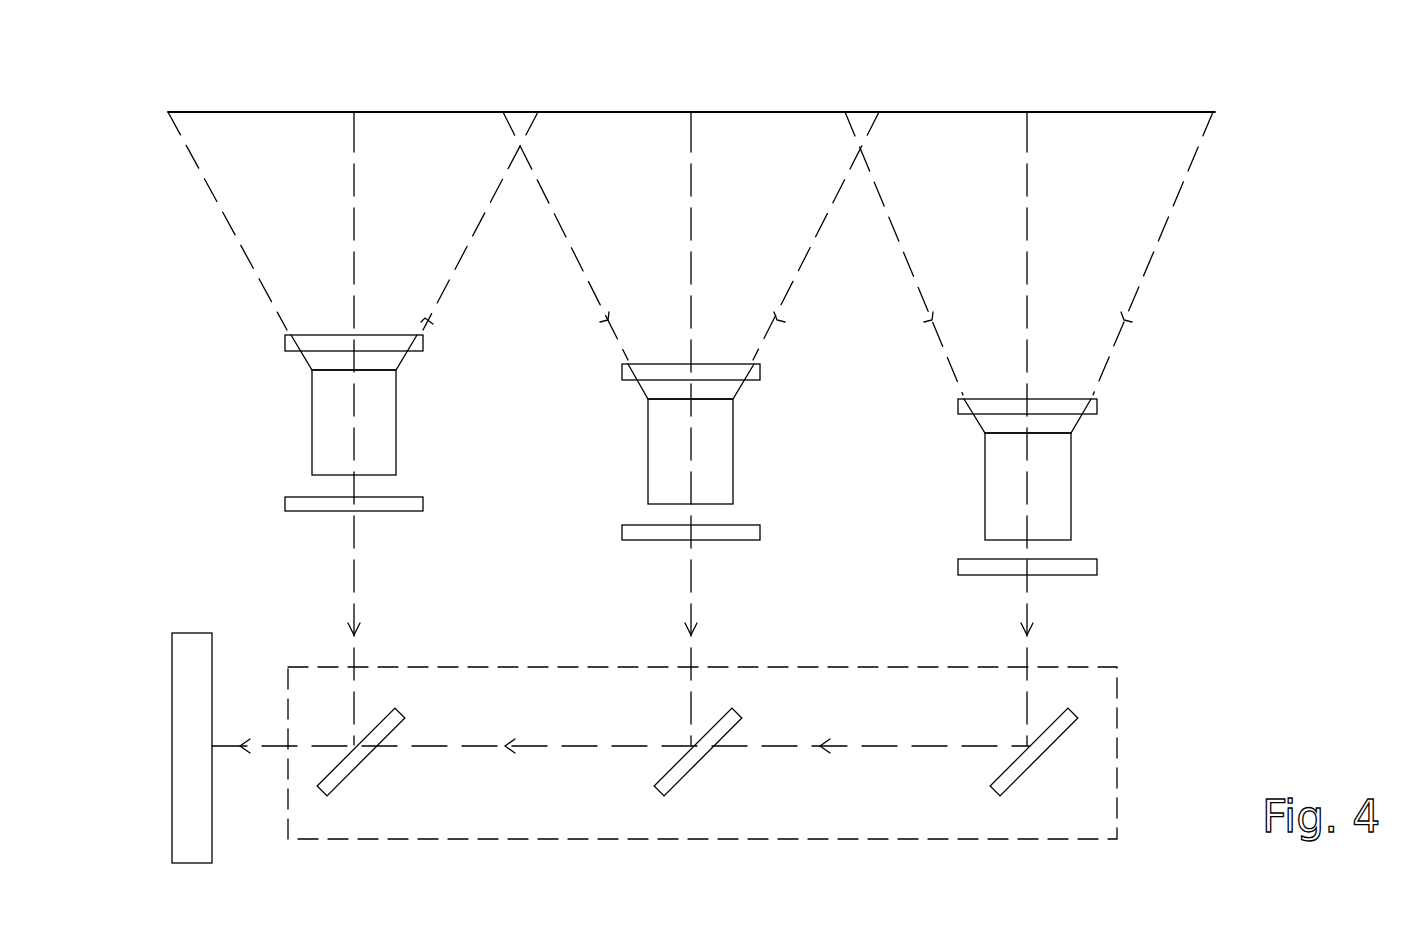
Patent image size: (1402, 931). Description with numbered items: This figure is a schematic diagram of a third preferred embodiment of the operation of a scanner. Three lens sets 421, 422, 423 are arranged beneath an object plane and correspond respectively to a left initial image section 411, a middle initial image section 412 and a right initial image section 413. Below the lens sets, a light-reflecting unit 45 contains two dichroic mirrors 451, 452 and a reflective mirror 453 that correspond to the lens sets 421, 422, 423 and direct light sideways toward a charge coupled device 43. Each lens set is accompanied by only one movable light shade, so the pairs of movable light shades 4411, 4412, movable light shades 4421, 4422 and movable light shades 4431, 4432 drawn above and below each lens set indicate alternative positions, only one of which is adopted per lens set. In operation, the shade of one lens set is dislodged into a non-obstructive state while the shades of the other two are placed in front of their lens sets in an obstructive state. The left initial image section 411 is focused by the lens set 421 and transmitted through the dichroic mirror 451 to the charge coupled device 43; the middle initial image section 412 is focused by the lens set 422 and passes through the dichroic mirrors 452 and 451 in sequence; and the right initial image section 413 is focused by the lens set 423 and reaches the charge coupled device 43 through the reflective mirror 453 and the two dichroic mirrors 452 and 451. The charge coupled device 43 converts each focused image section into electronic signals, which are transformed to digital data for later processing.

The left initial image section 411 is at (363, 112).
The middle initial image section 412 is at (700, 112).
The right initial image section 413 is at (1035, 112).
The lens set 421 is at (375, 415).
The lens set 422 is at (712, 444).
The lens set 423 is at (1048, 478).
The movable light shade 4411 is at (420, 343).
The movable light shade 4412 is at (420, 504).
The movable light shade 4421 is at (757, 372).
The movable light shade 4422 is at (757, 532).
The movable light shade 4431 is at (1094, 407).
The movable light shade 4432 is at (1094, 567).
The charge coupled device 43 is at (184, 720).
The light-reflecting unit 45 is at (1113, 693).
The dichroic mirror 451 is at (332, 785).
The dichroic mirror 452 is at (668, 783).
The reflective mirror 453 is at (1003, 783).